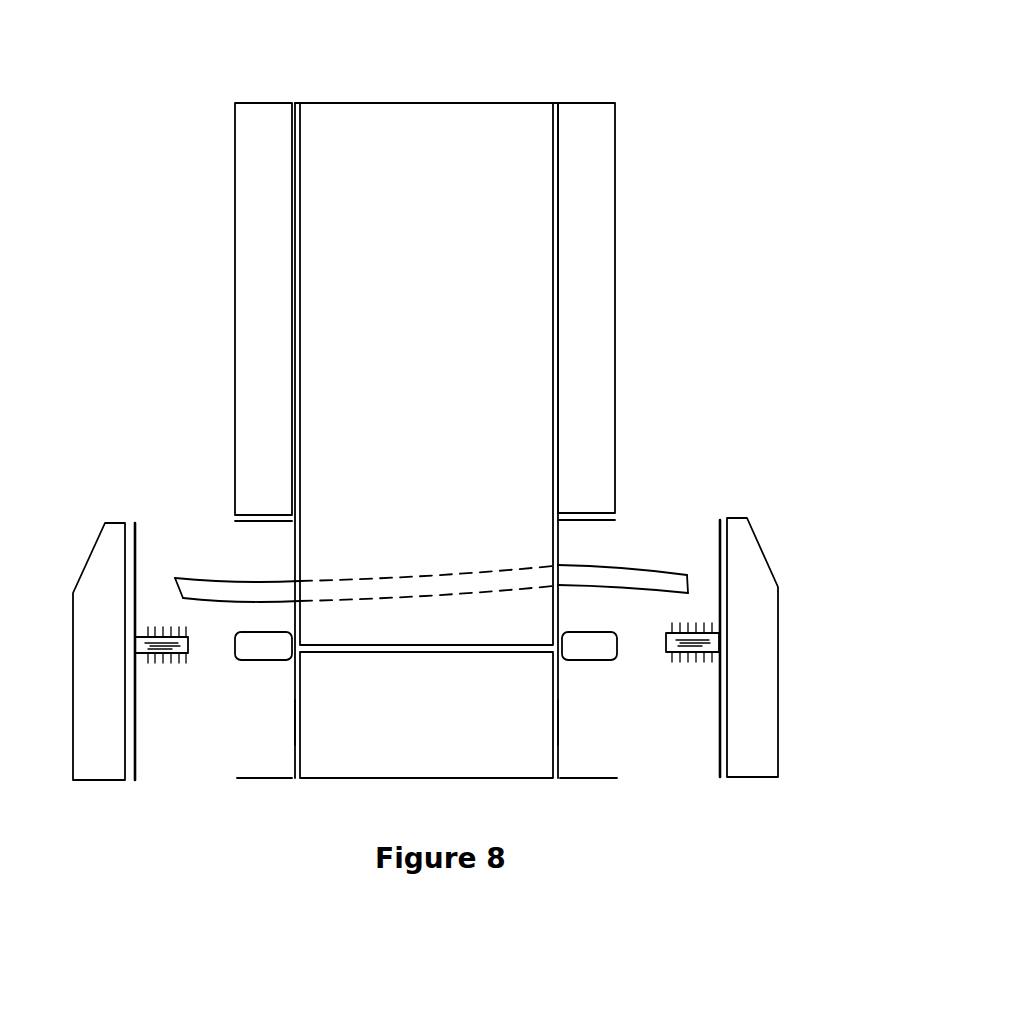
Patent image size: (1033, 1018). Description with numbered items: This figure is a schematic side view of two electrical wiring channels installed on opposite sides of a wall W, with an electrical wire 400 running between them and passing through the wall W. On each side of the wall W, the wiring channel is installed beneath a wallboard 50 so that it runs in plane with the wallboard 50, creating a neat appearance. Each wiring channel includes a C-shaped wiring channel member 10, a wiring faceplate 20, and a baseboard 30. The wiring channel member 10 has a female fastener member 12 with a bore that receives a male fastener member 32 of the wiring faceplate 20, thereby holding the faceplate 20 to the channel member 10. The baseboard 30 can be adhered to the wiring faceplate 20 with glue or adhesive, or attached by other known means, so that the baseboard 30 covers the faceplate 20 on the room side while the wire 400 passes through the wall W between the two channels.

The wall W is at (482, 98).
The wallboard 50 is at (235, 192).
The electrical wire 400 is at (222, 576).
The wiring faceplate 20 is at (135, 548).
The baseboard 30 is at (87, 568).
The male fastener member 32 is at (158, 666).
The female fastener member 12 is at (235, 633).
The wiring channel member 10 is at (290, 722).